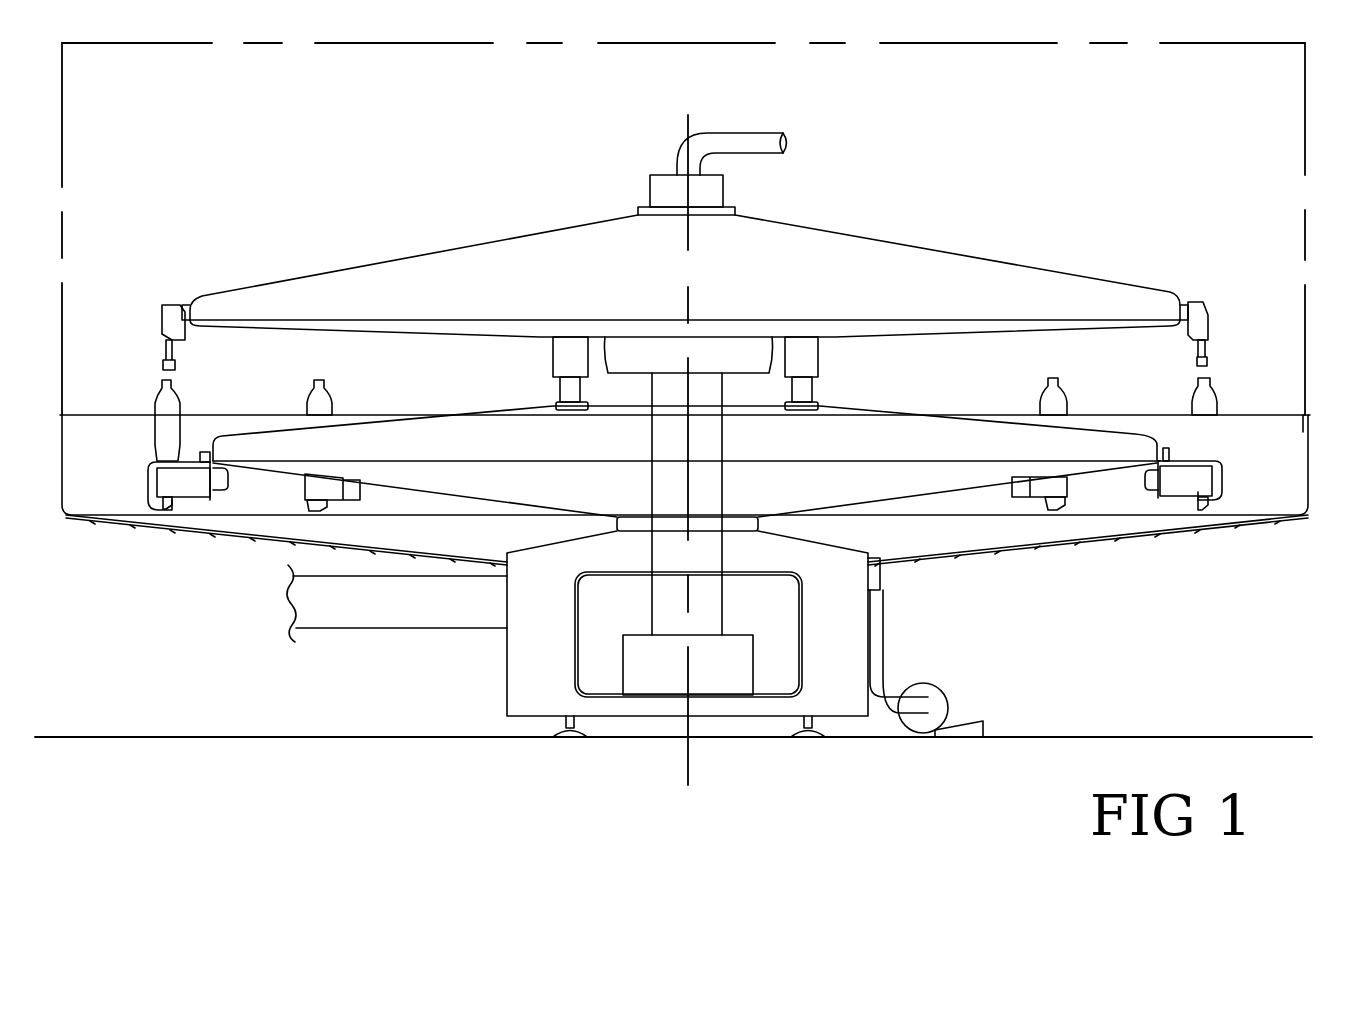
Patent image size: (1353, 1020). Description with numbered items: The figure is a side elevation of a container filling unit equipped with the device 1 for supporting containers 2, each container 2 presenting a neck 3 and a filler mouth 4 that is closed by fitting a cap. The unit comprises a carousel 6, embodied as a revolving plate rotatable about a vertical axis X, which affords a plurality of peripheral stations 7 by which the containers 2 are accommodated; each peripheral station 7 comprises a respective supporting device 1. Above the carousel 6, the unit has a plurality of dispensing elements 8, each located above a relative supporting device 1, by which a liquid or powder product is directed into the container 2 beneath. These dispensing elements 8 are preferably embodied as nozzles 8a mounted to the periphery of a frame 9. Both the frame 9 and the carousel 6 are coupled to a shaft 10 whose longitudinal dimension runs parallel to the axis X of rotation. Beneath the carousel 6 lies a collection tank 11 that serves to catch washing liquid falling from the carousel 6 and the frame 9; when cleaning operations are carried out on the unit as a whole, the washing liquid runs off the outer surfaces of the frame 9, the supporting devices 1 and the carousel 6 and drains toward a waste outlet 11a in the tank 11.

The device for supporting containers 1 is at (128, 493).
The container 2 is at (146, 405).
The neck 3 is at (173, 383).
The filler mouth 4 is at (167, 380).
The carousel 6 is at (1091, 484).
The peripheral station 7 is at (1150, 447).
The dispensing element 8 is at (174, 292).
The nozzle 8a is at (160, 333).
The frame 9 is at (897, 255).
The shaft 10 is at (723, 442).
The collection tank 11 is at (238, 535).
The waste outlet 11a is at (897, 556).
The vertical axis X is at (690, 767).